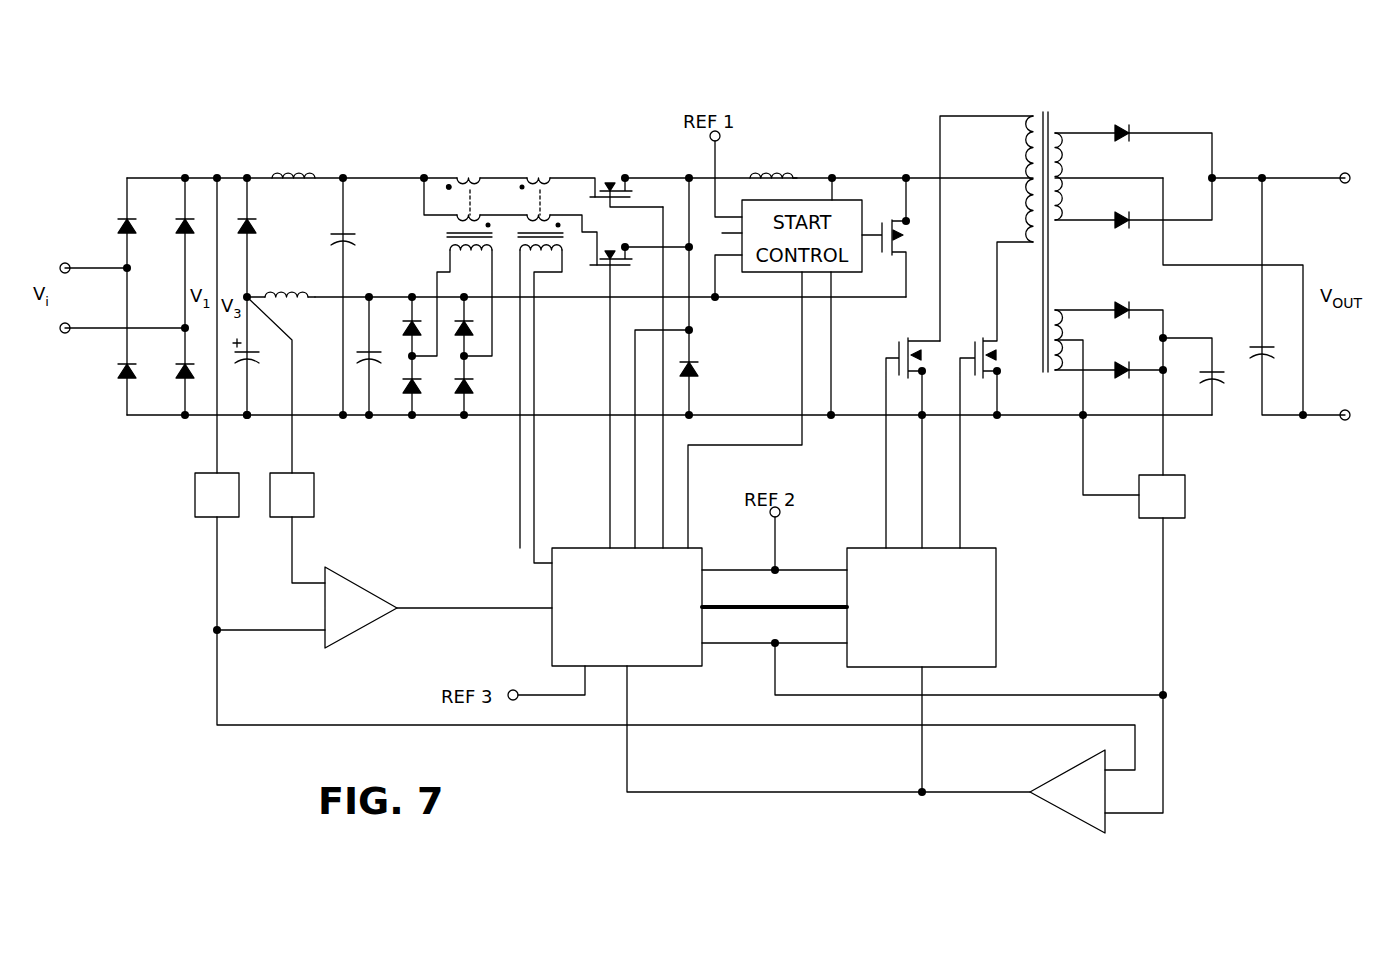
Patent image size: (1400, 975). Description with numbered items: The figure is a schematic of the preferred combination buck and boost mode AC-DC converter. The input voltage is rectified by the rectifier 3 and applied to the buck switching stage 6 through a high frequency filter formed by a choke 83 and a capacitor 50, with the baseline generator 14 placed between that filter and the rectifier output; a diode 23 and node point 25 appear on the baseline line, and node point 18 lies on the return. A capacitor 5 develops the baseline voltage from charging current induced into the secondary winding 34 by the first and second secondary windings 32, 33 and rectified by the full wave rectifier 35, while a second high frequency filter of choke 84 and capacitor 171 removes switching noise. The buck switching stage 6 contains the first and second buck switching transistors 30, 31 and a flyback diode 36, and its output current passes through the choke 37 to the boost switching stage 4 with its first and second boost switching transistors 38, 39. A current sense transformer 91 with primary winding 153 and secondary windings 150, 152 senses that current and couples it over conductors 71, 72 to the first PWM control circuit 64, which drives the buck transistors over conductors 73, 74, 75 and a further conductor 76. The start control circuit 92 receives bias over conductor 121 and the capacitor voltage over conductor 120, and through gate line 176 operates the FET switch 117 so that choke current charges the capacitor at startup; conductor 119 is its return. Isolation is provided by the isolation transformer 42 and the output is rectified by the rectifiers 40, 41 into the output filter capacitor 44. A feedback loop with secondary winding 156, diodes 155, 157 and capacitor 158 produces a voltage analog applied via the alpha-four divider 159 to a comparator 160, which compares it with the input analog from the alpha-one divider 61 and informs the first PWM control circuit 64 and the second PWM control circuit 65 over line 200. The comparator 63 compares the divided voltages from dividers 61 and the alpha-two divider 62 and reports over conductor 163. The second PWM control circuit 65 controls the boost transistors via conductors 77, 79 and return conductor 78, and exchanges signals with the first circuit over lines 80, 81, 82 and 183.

The rectifier 3 is at (200, 152).
The baseline generator 14 is at (250, 152).
The choke 83 is at (291, 172).
The diode 23 is at (258, 228).
The node 25 is at (250, 292).
The choke 84 is at (302, 302).
The capacitor 5 is at (252, 362).
The node point 18 is at (248, 420).
The alpha1 divider 61 is at (195, 493).
The alpha2 divider 62 is at (314, 493).
The capacitor 50 is at (355, 240).
The capacitor 171 is at (373, 348).
The full wave rectifier 35 is at (475, 386).
The secondary winding 34 is at (478, 255).
The primary winding 153 is at (558, 257).
The first secondary winding 32 is at (470, 175).
The current sense transformer 91 is at (541, 172).
The second secondary winding 33 is at (478, 218).
The secondary winding 152 is at (548, 224).
The secondary winding 150 is at (580, 224).
The buck switching stage 6 is at (558, 140).
The second buck switching transistor 31 is at (612, 172).
The first buck switching transistor 30 is at (620, 270).
The flyback diode 36 is at (699, 370).
The choke 37 is at (772, 172).
The conductor 121 is at (832, 190).
The start control circuit 92 is at (722, 233).
The conductor 120 is at (718, 273).
The line 119 is at (831, 333).
The conductor 75 is at (668, 446).
The line 76 is at (690, 471).
The gate line 176 is at (877, 222).
The FET switch 117 is at (908, 236).
The first boost switching transistor 38 is at (905, 343).
The second boost switching transistor 39 is at (955, 343).
The boost switching stage 4 is at (912, 112).
The isolation transformer 42 is at (1036, 254).
The secondary winding 156 is at (1051, 376).
The rectifier 41 is at (1160, 112).
The rectifier 40 is at (1130, 228).
The output filter capacitor 44 is at (1256, 340).
The diode 155 is at (1118, 304).
The diode 157 is at (1122, 362).
The capacitor 158 is at (1222, 385).
The alpha4 divider 159 is at (1185, 495).
The comparator 63 is at (352, 580).
The conductor 163 is at (447, 600).
The first PWM control circuit 64 is at (552, 625).
The second PWM control circuit 65 is at (996, 607).
The conductor 71 is at (518, 488).
The conductor 72 is at (537, 462).
The conductor 73 is at (608, 485).
The conductor 74 is at (634, 509).
The conductor 77 is at (886, 488).
The return conductor 78 is at (922, 471).
The conductor 79 is at (960, 490).
The line 80 is at (808, 568).
The bus line 81 is at (800, 604).
The line 82 is at (816, 648).
The line 183 is at (745, 648).
The line 200 is at (944, 786).
The comparator 160 is at (1068, 766).